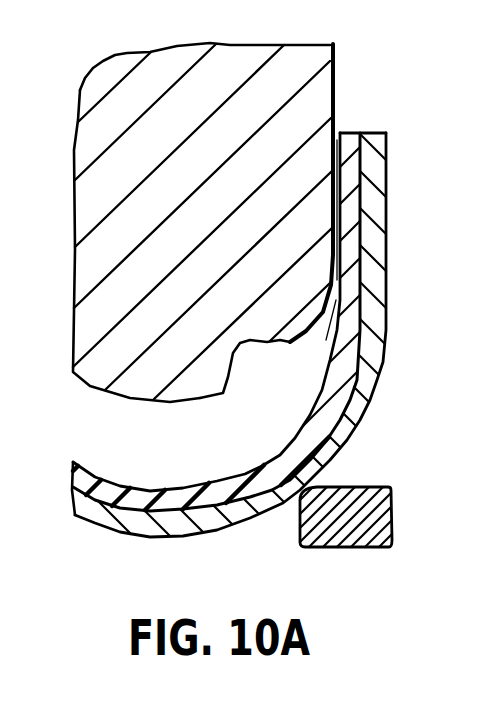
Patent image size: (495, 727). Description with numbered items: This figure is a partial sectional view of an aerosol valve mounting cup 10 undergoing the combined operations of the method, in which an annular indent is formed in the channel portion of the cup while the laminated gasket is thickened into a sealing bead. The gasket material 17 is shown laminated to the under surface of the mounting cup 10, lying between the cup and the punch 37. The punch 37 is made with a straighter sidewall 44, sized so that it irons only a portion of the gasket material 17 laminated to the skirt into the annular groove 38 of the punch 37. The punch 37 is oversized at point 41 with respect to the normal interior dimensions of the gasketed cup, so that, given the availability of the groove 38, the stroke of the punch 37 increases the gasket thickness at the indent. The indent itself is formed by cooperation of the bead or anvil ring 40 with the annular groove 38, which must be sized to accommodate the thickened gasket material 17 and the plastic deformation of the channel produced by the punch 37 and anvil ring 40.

The mounting cup 10 is at (268, 315).
The gasket material 17 is at (350, 130).
The punch 37 is at (318, 80).
The annular groove 38 is at (252, 344).
The anvil ring 40 is at (378, 507).
The point 41 is at (337, 313).
The straighter sidewall 44 is at (337, 97).